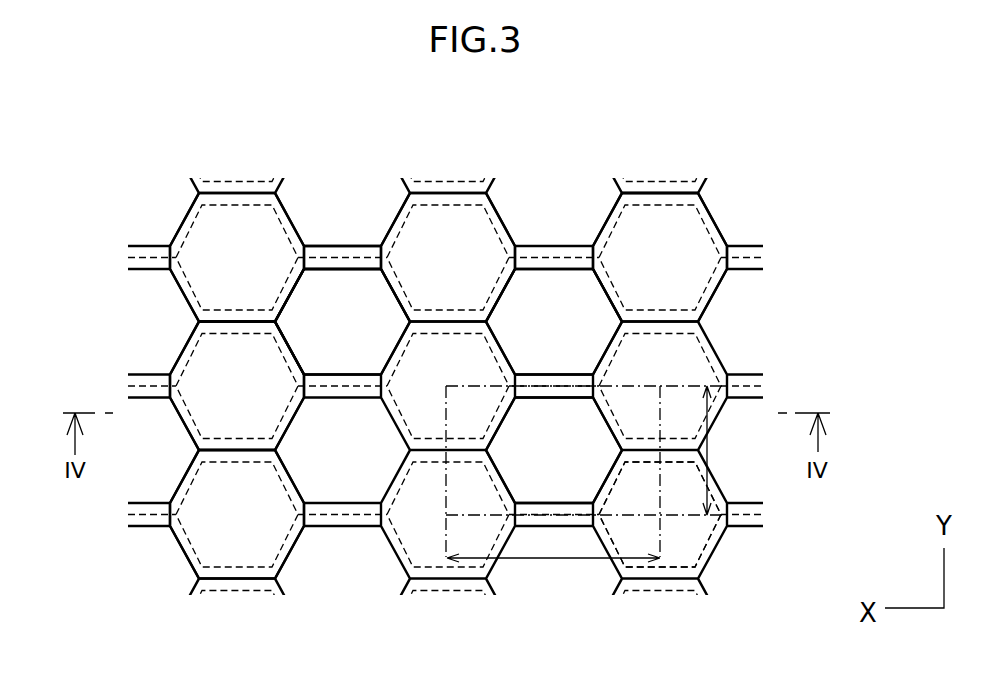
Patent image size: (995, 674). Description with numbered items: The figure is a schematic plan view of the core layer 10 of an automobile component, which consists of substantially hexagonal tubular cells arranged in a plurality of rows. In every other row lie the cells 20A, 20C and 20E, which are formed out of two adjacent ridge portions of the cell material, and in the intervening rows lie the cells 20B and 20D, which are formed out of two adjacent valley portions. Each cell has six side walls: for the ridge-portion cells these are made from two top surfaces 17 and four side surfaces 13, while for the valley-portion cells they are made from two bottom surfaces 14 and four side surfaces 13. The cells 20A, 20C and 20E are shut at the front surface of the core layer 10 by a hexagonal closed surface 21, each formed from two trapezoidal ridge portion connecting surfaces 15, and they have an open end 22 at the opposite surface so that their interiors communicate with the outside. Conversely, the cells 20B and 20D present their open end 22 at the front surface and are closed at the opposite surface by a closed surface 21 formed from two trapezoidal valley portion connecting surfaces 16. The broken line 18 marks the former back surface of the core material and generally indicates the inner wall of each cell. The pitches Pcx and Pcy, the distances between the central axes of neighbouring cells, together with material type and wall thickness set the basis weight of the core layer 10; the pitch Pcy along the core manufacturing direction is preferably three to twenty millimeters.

The core layer 10 is at (812, 193).
The side surface 13 is at (291, 291).
The bottom surface 14 is at (355, 270).
The ridge portion connecting surface 15 is at (232, 222).
The valley portion connecting surface 16 is at (336, 316).
The top surface 17 is at (186, 322).
The broken line 18 is at (660, 194).
The cell 20A is at (214, 533).
The cell 20B is at (301, 462).
The cell 20C is at (458, 233).
The cell 20D is at (564, 297).
The cell 20E is at (678, 258).
The closed surface 21 is at (687, 536).
The open end 22 is at (569, 430).
The pitch Pcx is at (553, 490).
The pitch Pcy is at (606, 450).